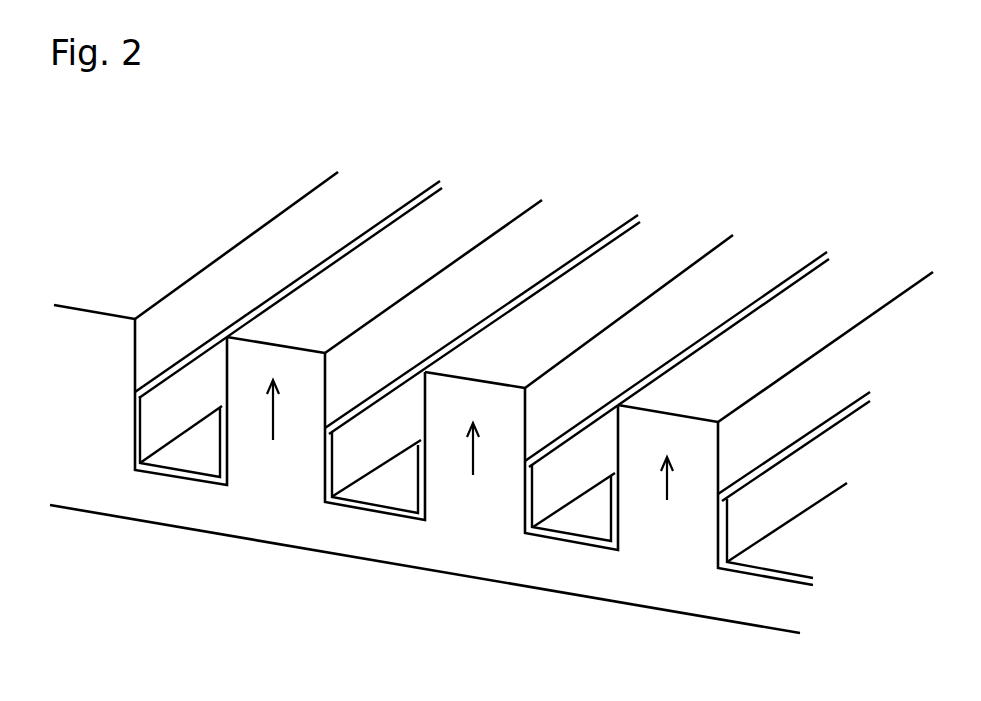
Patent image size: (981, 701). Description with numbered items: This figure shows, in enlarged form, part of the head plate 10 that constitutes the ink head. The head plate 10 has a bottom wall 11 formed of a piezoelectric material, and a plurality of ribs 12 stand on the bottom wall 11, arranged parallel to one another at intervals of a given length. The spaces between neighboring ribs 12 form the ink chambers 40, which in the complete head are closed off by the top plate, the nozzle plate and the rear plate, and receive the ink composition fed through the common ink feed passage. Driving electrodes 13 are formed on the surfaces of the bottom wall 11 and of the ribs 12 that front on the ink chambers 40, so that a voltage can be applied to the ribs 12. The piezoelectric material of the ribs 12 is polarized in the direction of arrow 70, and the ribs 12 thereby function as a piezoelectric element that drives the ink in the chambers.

The head plate 10 is at (375, 110).
The bottom wall 11 is at (370, 532).
The ribs 12 is at (278, 452).
The driving electrodes 13 is at (162, 418).
The ink chambers 40 is at (193, 327).
The arrow 70 is at (273, 413).